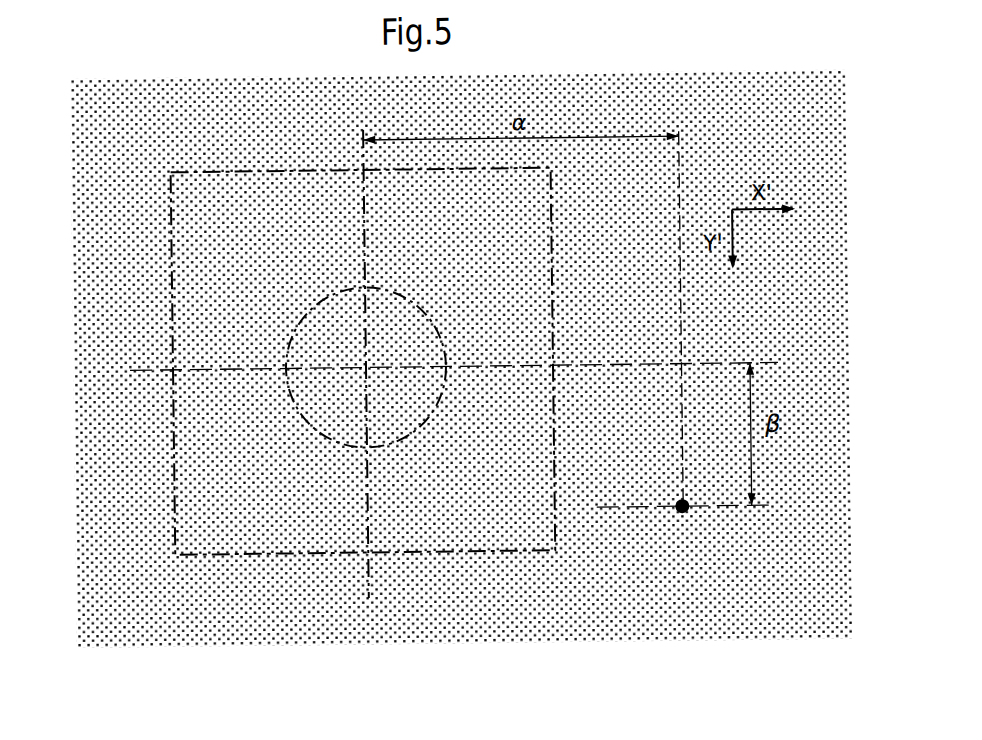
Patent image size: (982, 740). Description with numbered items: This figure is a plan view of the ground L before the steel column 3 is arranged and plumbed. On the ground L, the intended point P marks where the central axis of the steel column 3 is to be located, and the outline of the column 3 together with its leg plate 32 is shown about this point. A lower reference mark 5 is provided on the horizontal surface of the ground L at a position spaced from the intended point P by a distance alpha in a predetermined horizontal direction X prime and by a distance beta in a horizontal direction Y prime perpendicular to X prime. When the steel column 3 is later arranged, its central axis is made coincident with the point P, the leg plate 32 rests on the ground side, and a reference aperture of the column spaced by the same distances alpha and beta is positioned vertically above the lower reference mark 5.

The steel column 3 is at (337, 438).
The lower reference mark 5 is at (683, 518).
The leg plate 32 is at (273, 553).
The intended point P is at (366, 368).
The ground L is at (823, 280).